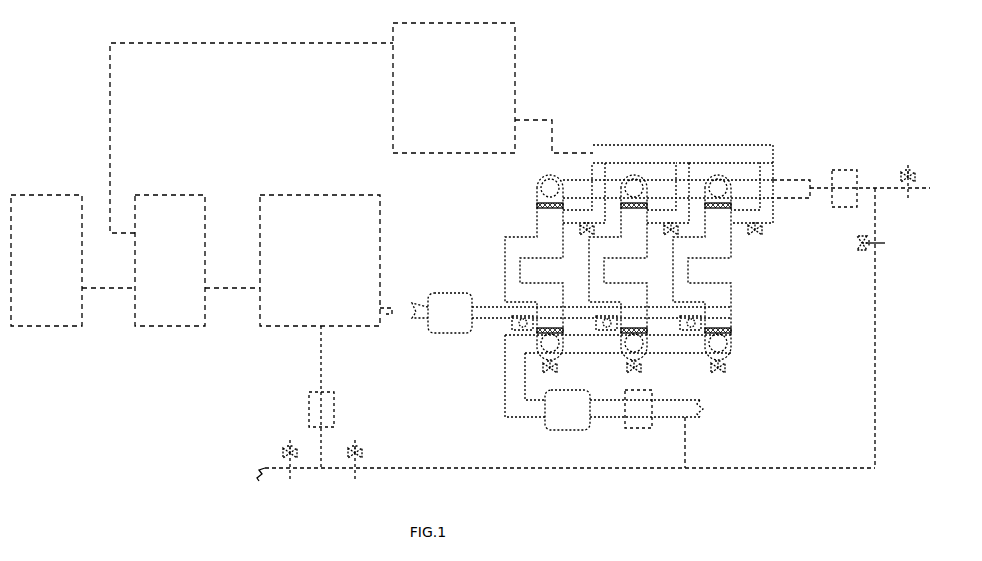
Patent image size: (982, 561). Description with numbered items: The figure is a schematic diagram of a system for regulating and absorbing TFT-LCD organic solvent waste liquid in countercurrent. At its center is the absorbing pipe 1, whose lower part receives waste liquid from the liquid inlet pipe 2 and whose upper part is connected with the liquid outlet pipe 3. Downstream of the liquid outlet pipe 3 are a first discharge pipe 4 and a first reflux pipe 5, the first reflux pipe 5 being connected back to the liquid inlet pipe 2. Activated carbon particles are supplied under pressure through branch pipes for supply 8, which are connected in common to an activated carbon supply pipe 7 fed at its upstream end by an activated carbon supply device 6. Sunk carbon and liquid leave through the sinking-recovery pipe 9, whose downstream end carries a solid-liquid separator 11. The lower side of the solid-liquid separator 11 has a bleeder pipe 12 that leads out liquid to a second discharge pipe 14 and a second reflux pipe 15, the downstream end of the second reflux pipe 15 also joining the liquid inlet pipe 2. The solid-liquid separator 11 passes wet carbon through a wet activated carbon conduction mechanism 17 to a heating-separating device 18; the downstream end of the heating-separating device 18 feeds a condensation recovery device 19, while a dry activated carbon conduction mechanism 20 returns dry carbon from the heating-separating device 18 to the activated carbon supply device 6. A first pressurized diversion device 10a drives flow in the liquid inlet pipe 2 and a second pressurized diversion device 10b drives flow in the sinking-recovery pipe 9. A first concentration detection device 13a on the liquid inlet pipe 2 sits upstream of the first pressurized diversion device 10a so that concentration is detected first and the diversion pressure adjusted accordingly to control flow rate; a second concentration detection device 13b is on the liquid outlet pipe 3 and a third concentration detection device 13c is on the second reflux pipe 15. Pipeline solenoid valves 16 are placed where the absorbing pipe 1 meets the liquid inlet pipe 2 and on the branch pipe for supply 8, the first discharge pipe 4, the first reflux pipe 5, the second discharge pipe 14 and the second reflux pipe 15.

The absorbing pipe 1 is at (535, 230).
The liquid inlet pipe 2 is at (505, 390).
The liquid outlet pipe 3 is at (778, 197).
The first discharge pipe 4 is at (890, 188).
The first reflux pipe 5 is at (875, 278).
The activated carbon supply device 6 is at (515, 75).
The activated carbon supply pipe 7 is at (552, 120).
The branch pipe for supply 8 is at (775, 160).
The sinking-recovery pipe 9 is at (495, 305).
The first pressurized diversion device 10a is at (560, 432).
The second pressurized diversion device 10b is at (447, 335).
The solid-liquid separator 11 is at (312, 195).
The bleeder pipe 12 is at (322, 360).
The first concentration detection device 13a is at (638, 428).
The second concentration detection device 13b is at (840, 170).
The third concentration detection device 13c is at (309, 408).
The second discharge pipe 14 is at (268, 465).
The second reflux pipe 15 is at (385, 465).
The pipeline solenoid valve 16 is at (908, 165).
The wet activated carbon conduction mechanism 17 is at (235, 288).
The heating-separating device 18 is at (173, 195).
The condensation recovery device 19 is at (62, 195).
The dry activated carbon conduction mechanism 20 is at (328, 43).